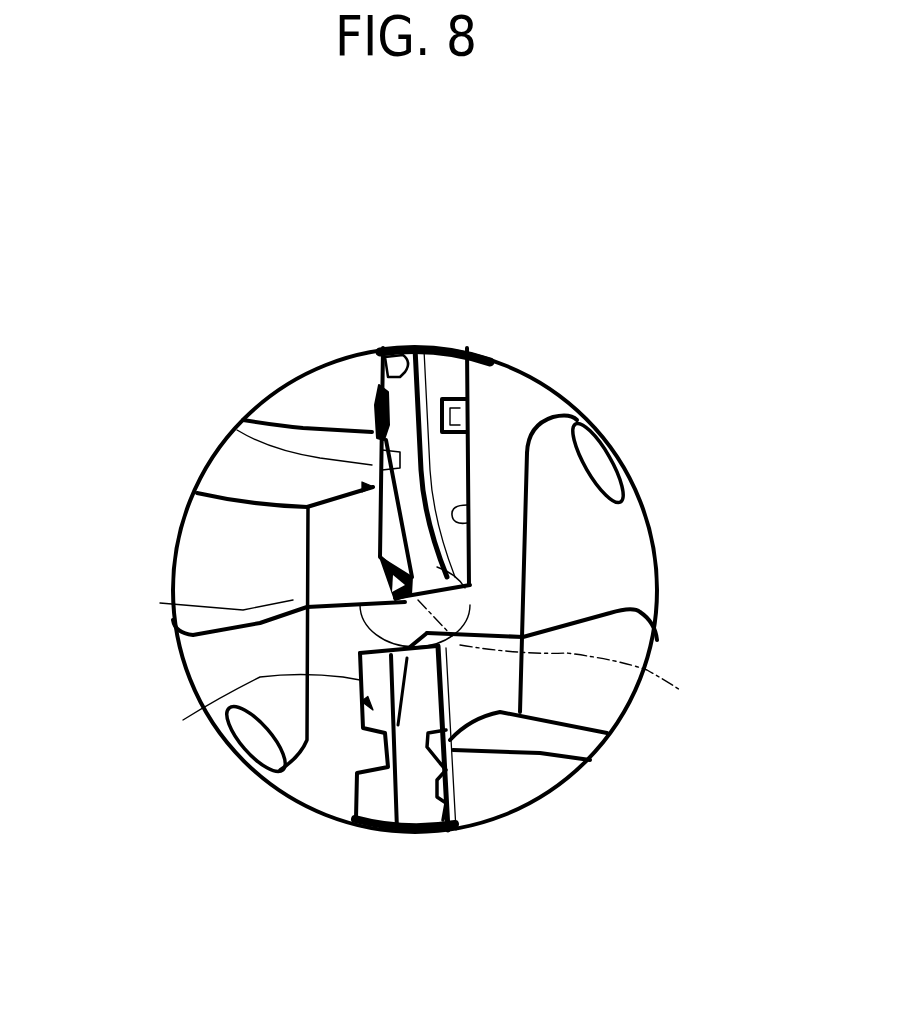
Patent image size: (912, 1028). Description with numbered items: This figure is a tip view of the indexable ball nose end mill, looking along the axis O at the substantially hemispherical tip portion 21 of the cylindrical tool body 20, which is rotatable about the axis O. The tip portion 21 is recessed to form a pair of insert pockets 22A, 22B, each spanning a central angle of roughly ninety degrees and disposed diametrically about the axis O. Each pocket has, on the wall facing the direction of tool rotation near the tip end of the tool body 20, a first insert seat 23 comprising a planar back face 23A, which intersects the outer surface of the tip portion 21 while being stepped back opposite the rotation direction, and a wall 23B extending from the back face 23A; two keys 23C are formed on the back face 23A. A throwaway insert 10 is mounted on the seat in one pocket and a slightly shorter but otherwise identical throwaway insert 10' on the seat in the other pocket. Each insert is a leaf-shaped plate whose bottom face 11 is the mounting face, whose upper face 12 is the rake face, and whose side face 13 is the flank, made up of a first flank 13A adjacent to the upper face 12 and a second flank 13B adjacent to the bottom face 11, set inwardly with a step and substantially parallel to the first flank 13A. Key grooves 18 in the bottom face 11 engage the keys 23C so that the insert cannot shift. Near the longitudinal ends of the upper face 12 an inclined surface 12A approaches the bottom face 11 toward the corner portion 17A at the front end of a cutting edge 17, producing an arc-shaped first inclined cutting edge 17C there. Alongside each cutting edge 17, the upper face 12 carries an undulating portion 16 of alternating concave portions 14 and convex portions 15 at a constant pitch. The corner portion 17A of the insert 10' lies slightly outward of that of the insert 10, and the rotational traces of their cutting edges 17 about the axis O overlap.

The throwaway insert 10 is at (478, 391).
The throwaway insert 10' is at (398, 810).
The bottom face 11 is at (470, 543).
The upper face 12 is at (375, 465).
The inclined surface 12A is at (175, 612).
The side face 13 is at (449, 215).
The first flank 13A is at (385, 350).
The second flank 13B is at (443, 345).
The concave portion 14 is at (318, 432).
The convex portion 15 is at (358, 375).
The undulating portion 16 is at (370, 430).
The cutting edge 17 is at (380, 505).
The corner portion 17A is at (360, 620).
The first inclined cutting edge 17C is at (380, 545).
The key groove 18 is at (470, 345).
The tool body 20 is at (620, 417).
The tip portion 21 is at (535, 403).
The insert pocket 22A is at (243, 439).
The insert pocket 22B is at (583, 751).
The first insert seat 23 is at (463, 485).
The back face 23A is at (470, 520).
The wall 23B is at (470, 565).
The key 23C is at (467, 420).
The axis O is at (561, 655).